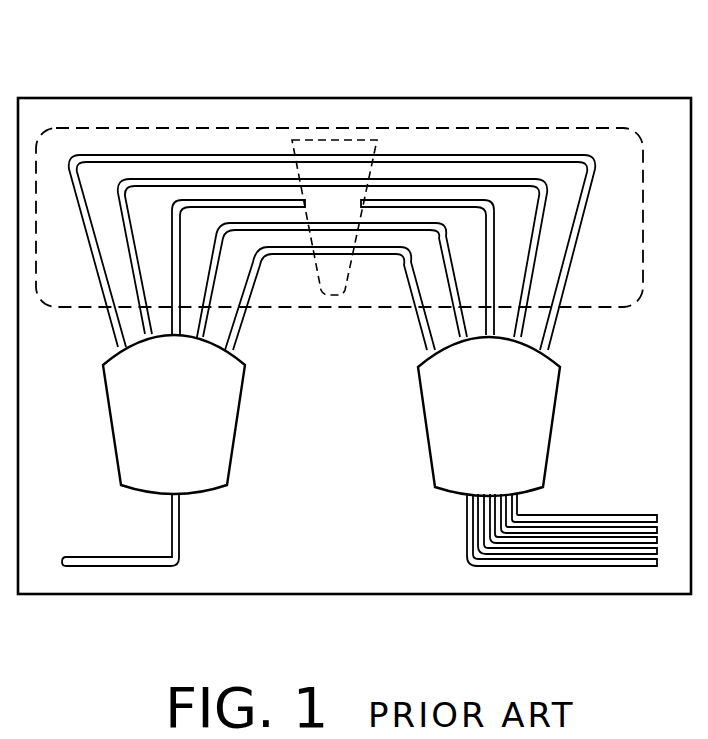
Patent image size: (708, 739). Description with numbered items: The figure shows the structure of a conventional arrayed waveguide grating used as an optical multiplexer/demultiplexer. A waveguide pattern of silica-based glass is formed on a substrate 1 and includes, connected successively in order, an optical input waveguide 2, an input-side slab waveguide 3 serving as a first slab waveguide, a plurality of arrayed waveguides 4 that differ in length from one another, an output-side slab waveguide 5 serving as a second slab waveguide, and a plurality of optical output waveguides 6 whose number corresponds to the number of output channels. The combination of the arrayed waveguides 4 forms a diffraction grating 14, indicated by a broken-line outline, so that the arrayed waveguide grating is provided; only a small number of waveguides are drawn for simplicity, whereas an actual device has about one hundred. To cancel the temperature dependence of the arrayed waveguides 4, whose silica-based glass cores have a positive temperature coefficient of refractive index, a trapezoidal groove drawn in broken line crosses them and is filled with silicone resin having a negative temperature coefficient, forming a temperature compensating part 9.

The substrate 1 is at (607, 98).
The optical input waveguide 2 is at (180, 529).
The input-side slab waveguide 3 is at (240, 417).
The arrayed waveguides 4 is at (262, 248).
The output-side slab waveguide 5 is at (553, 420).
The optical output waveguides 6 is at (640, 562).
The temperature compensating part 9 is at (340, 140).
The diffraction grating 14 is at (510, 128).